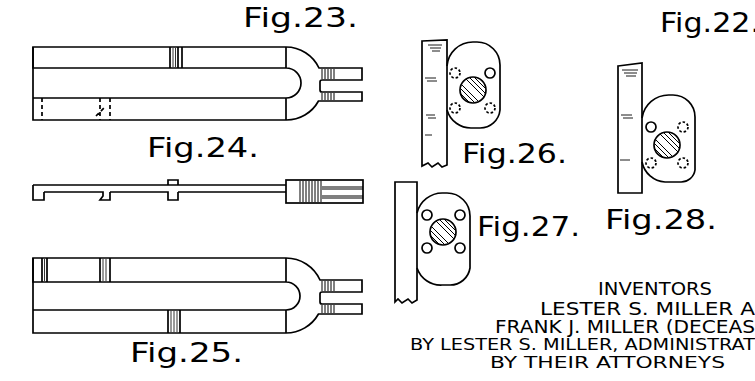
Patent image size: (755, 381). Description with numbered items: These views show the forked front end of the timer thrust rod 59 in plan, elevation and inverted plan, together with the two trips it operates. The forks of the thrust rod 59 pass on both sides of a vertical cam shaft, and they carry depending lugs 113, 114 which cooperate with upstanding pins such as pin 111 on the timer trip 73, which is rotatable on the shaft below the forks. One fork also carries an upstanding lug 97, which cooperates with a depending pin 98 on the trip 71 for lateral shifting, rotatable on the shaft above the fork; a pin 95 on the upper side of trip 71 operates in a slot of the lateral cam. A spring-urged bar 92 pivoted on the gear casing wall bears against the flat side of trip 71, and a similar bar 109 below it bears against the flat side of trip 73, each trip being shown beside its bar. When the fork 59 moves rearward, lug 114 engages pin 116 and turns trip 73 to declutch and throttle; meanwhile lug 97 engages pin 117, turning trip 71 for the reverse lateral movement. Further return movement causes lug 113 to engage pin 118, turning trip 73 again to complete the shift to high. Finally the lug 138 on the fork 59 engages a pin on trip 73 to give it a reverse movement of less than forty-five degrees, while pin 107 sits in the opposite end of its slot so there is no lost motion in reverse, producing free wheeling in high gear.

In FIG. 23, the timer thrust rod 59 is at (297, 105).
In FIG. 24, the timer thrust rod 59 is at (292, 193).
In FIG. 25, the timer thrust rod 59 is at (302, 318).
In FIG. 23, the upstanding lug 97 is at (175, 63).
In FIG. 24, the upstanding lug 97 is at (168, 182).
In FIG. 23, the lug 138 is at (38, 120).
In FIG. 24, the lug 138 is at (38, 203).
In FIG. 25, the lug 138 is at (36, 268).
In FIG. 23, the depending lug 113 is at (92, 119).
In FIG. 24, the depending lug 113 is at (100, 201).
In FIG. 25, the depending lug 113 is at (107, 265).
In FIG. 24, the depending lug 114 is at (178, 200).
In FIG. 25, the depending lug 114 is at (173, 318).
In FIG. 26, the timer trip 73 is at (478, 55).
In FIG. 27, the trip 71 is at (438, 276).
In FIG. 28, the trip 71 is at (676, 108).
In FIG. 26, the pin 107 is at (494, 72).
In FIG. 26, the bar 109 is at (432, 63).
In FIG. 28, the bar 109 is at (625, 72).
In FIG. 26, the upstanding pin 111 is at (503, 83).
In FIG. 26, the pin 116 is at (452, 108).
In FIG. 28, the pin 116 is at (642, 167).
In FIG. 26, the pin 118 is at (503, 113).
In FIG. 27, the pin 117 is at (463, 213).
In FIG. 28, the pin 117 is at (697, 170).
In FIG. 27, the depending pin 98 is at (461, 252).
In FIG. 28, the depending pin 98 is at (698, 120).
In FIG. 27, the pin 95 is at (423, 248).
In FIG. 28, the pin 95 is at (648, 125).
In FIG. 27, the bar 92 is at (403, 222).